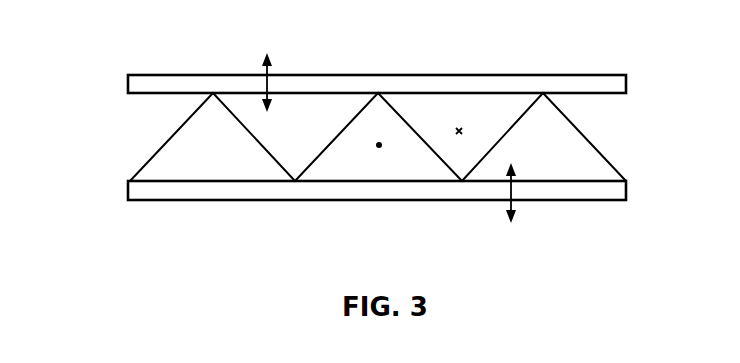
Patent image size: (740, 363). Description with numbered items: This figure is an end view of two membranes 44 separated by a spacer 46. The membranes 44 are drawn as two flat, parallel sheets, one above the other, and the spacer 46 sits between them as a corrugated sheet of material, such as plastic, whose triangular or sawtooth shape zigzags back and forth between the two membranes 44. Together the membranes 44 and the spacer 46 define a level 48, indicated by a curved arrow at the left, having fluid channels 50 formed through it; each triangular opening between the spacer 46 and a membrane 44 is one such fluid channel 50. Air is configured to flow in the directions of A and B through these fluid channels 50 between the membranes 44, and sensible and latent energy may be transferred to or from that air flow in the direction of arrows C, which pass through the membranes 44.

The membrane 44 is at (577, 73).
The spacer 46 is at (593, 142).
The level 48 is at (132, 138).
The fluid channel 50 is at (217, 158).
The air flow direction A is at (379, 140).
The air flow direction B is at (459, 127).
The energy transfer direction arrows C is at (265, 70).